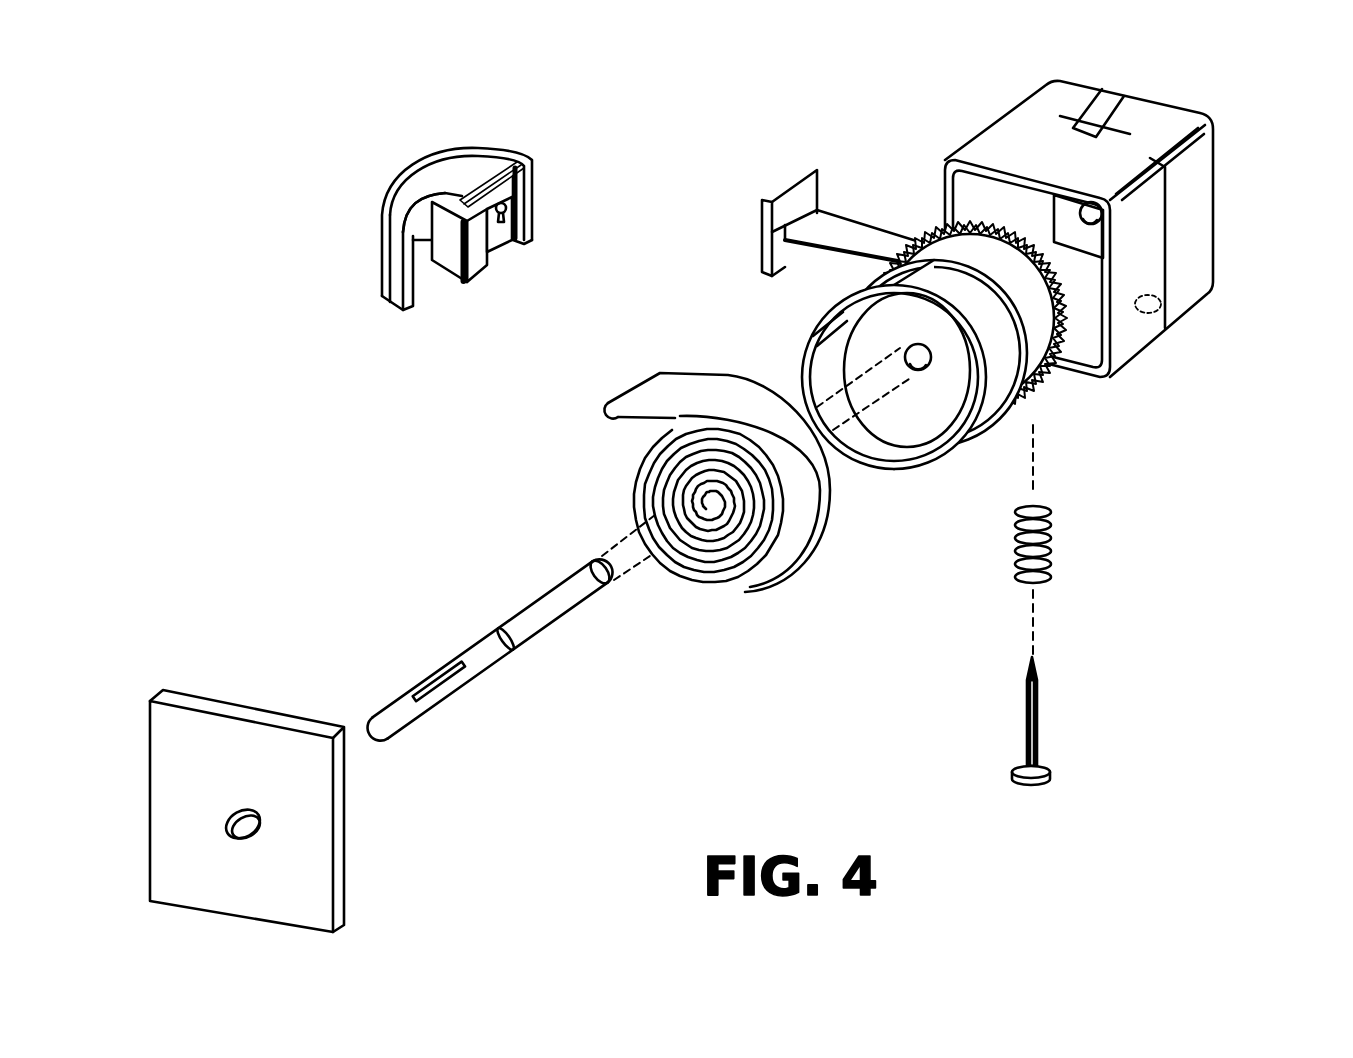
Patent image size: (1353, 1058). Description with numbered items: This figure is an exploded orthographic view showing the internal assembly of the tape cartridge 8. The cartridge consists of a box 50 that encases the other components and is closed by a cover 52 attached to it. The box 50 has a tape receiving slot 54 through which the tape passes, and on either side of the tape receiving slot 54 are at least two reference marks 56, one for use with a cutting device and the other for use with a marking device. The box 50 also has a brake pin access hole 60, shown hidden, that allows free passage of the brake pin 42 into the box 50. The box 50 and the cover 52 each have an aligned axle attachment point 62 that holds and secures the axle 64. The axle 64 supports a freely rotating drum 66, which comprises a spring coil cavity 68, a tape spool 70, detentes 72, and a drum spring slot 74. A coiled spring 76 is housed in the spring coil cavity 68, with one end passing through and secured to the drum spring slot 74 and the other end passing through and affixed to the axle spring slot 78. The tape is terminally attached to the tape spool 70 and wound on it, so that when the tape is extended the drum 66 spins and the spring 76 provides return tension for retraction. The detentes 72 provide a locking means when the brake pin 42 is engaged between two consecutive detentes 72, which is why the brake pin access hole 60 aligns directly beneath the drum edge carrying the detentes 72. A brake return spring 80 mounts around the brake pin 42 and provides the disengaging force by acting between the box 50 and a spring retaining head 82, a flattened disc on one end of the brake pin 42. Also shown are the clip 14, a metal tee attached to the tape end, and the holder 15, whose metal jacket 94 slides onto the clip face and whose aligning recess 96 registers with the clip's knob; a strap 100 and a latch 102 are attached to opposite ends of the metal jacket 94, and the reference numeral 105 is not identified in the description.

The tape cartridge 8 is at (1242, 102).
The clip 14 is at (753, 207).
The holder 15 is at (442, 210).
The brake pin 42 is at (1157, 727).
The box 50 is at (777, 440).
The cover 52 is at (350, 901).
The tape receiving slot 54 is at (1118, 92).
The reference marks 56 is at (1088, 92).
The brake pin access hole 60 is at (1164, 305).
The axle attachment point 62 is at (1072, 215).
The axle 64 is at (493, 625).
The drum 66 is at (847, 454).
The spring coil cavity 68 is at (913, 424).
The tape spool 70 is at (1030, 344).
The detentes 72 is at (1053, 387).
The drum spring slot 74 is at (806, 341).
The spring 76 is at (626, 469).
The axle spring slot 78 is at (442, 694).
The brake return spring 80 is at (1058, 570).
The spring retaining head 82 is at (1058, 777).
The metal jacket 94 is at (512, 146).
The aligning recess 96 is at (503, 228).
The strap 100 is at (440, 146).
The latch 102 is at (440, 276).
The inner surface 105 is at (407, 215).